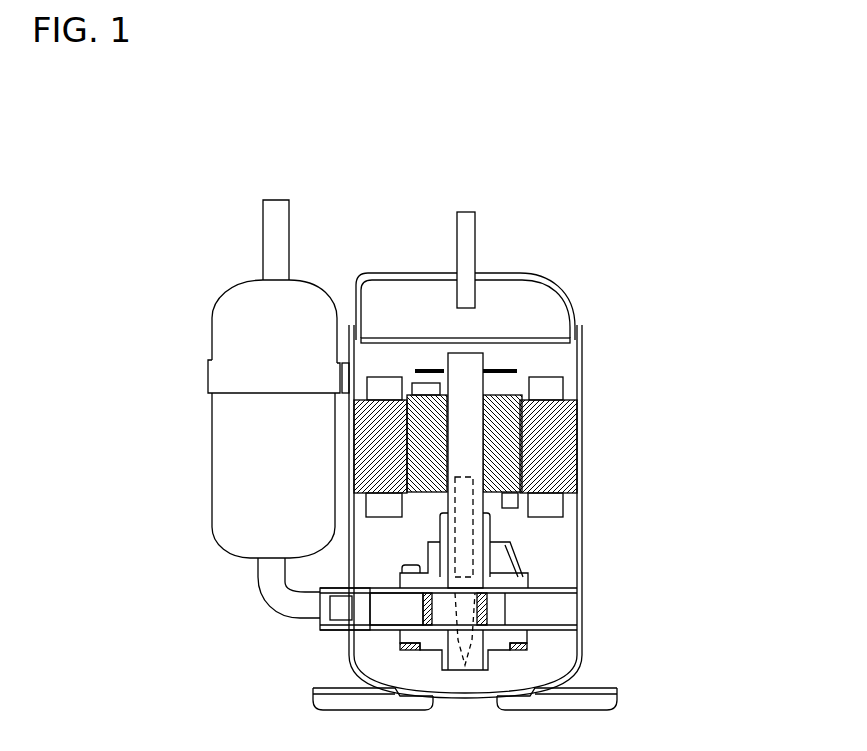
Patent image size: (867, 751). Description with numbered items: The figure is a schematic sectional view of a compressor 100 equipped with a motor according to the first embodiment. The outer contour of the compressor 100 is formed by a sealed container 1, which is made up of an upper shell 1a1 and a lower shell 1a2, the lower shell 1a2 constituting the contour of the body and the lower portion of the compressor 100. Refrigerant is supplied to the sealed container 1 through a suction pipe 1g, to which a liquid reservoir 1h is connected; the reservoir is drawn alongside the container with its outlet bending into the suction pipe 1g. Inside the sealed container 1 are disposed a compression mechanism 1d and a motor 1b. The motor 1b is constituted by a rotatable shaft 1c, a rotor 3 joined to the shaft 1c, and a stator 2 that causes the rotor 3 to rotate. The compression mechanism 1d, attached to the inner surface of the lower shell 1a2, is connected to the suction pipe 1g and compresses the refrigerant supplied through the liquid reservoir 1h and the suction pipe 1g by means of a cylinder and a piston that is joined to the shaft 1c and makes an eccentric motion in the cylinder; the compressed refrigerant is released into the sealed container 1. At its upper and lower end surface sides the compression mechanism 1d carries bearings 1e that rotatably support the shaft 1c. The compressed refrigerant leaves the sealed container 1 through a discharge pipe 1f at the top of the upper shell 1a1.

The compressor 100 is at (311, 174).
The sealed container 1 is at (413, 266).
The upper shell 1a1 is at (570, 297).
The lower shell 1a2 is at (582, 532).
The motor 1b is at (669, 326).
The shaft 1c is at (463, 377).
The compression mechanism 1d is at (487, 612).
The bearings 1e is at (515, 581).
The discharge pipe 1f is at (470, 245).
The suction pipe 1g is at (288, 606).
The liquid reservoir 1h is at (238, 448).
The stator 2 is at (580, 413).
The rotor 3 is at (580, 449).